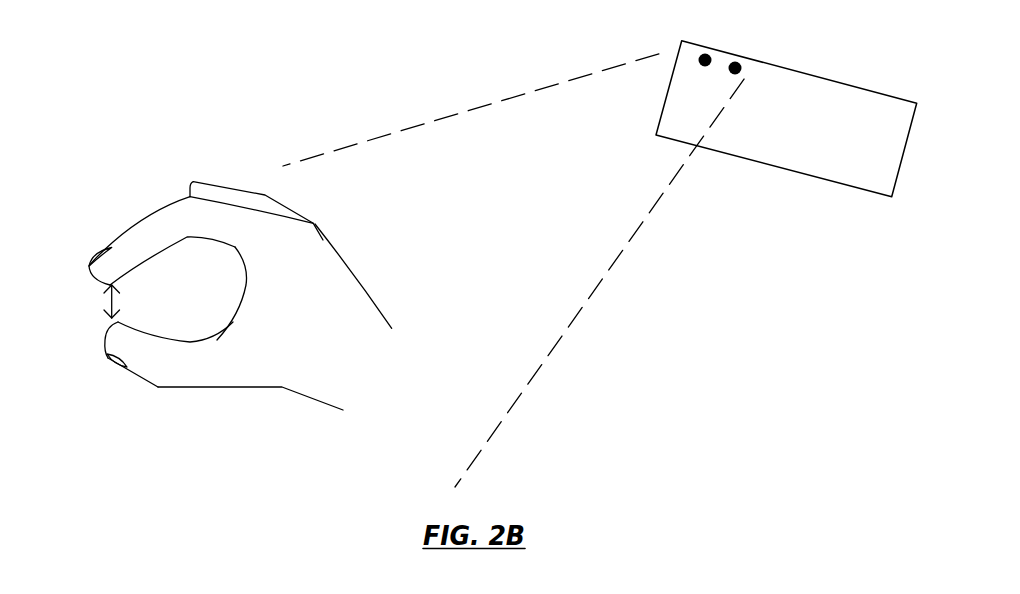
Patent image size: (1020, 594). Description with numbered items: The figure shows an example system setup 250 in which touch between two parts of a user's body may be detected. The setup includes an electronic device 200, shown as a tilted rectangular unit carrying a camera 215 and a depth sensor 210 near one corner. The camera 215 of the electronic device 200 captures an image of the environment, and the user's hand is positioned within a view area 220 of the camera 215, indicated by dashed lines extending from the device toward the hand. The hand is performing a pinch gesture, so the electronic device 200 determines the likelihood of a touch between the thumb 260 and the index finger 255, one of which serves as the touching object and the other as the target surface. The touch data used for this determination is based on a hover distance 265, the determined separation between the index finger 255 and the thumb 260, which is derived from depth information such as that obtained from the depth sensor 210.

The electronic device 200 is at (903, 165).
The depth sensor 210 is at (715, 56).
The camera 215 is at (745, 70).
The view area 220 is at (528, 96).
The system setup 250 is at (387, 60).
The index finger 255 is at (90, 278).
The thumb 260 is at (107, 332).
The hover distance 265 is at (122, 300).